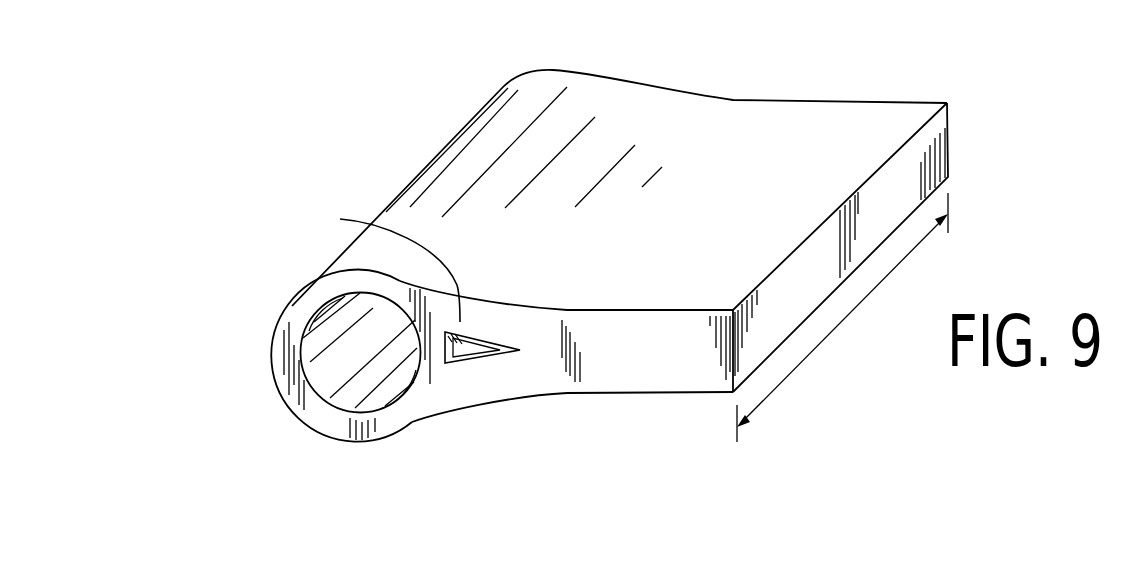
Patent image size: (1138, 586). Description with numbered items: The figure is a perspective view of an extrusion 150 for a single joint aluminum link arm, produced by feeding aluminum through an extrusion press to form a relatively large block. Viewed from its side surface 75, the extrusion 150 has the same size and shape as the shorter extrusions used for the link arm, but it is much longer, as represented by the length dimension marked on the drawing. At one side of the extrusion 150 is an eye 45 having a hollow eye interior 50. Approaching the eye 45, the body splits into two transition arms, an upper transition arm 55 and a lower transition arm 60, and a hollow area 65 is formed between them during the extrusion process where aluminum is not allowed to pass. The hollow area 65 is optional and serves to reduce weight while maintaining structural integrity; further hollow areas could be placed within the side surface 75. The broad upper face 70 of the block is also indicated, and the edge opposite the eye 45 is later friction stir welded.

The extrusion 150 is at (644, 58).
The top surface of block 70 is at (728, 116).
The upper transition arm 55 is at (380, 292).
The eye 45 is at (277, 367).
The hollow eye interior 50 is at (350, 387).
The lower transition arm 60 is at (490, 378).
The side surface 75 is at (677, 370).
The hollow area 65 is at (477, 348).